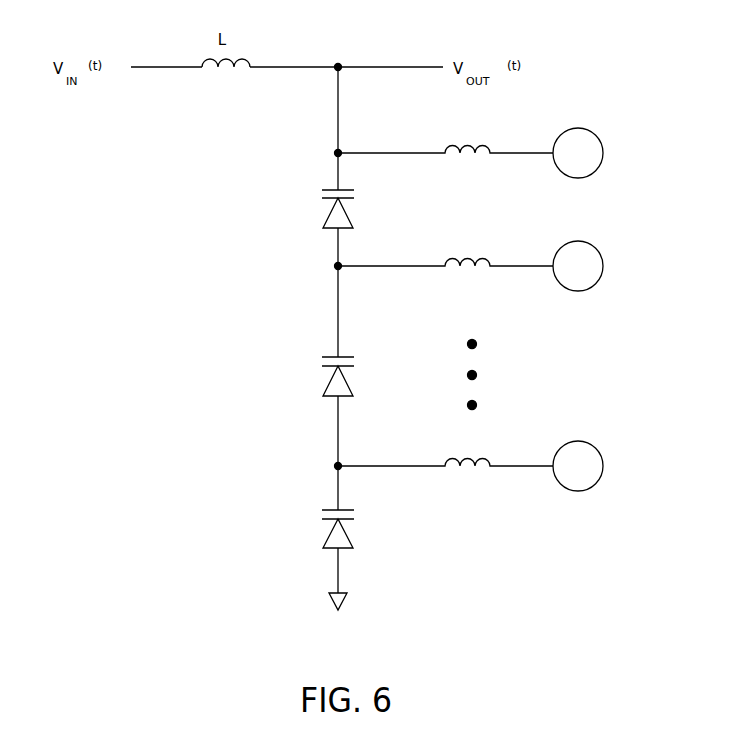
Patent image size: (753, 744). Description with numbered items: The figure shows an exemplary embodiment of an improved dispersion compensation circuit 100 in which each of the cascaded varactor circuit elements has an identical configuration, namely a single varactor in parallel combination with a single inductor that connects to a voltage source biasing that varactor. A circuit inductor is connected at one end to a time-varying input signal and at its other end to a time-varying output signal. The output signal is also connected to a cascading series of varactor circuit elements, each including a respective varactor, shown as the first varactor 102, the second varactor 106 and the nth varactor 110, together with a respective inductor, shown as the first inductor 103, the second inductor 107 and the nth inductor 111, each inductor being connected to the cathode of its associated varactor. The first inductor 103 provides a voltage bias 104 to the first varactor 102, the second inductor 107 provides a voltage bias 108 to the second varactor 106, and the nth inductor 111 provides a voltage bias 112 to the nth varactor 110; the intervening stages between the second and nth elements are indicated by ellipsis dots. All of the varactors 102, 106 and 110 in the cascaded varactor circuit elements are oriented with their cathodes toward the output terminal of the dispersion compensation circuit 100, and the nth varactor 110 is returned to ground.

The dispersion compensation circuit 100 is at (580, 31).
The varactor D1 102 is at (310, 198).
The inductor L1 103 is at (467, 157).
The voltage bias 104 is at (603, 153).
The varactor D2 106 is at (310, 367).
The inductor L2 107 is at (467, 270).
The voltage bias 108 is at (603, 266).
The varactor Dn 110 is at (281, 549).
The inductor Ln 111 is at (467, 470).
The voltage bias 112 is at (603, 466).